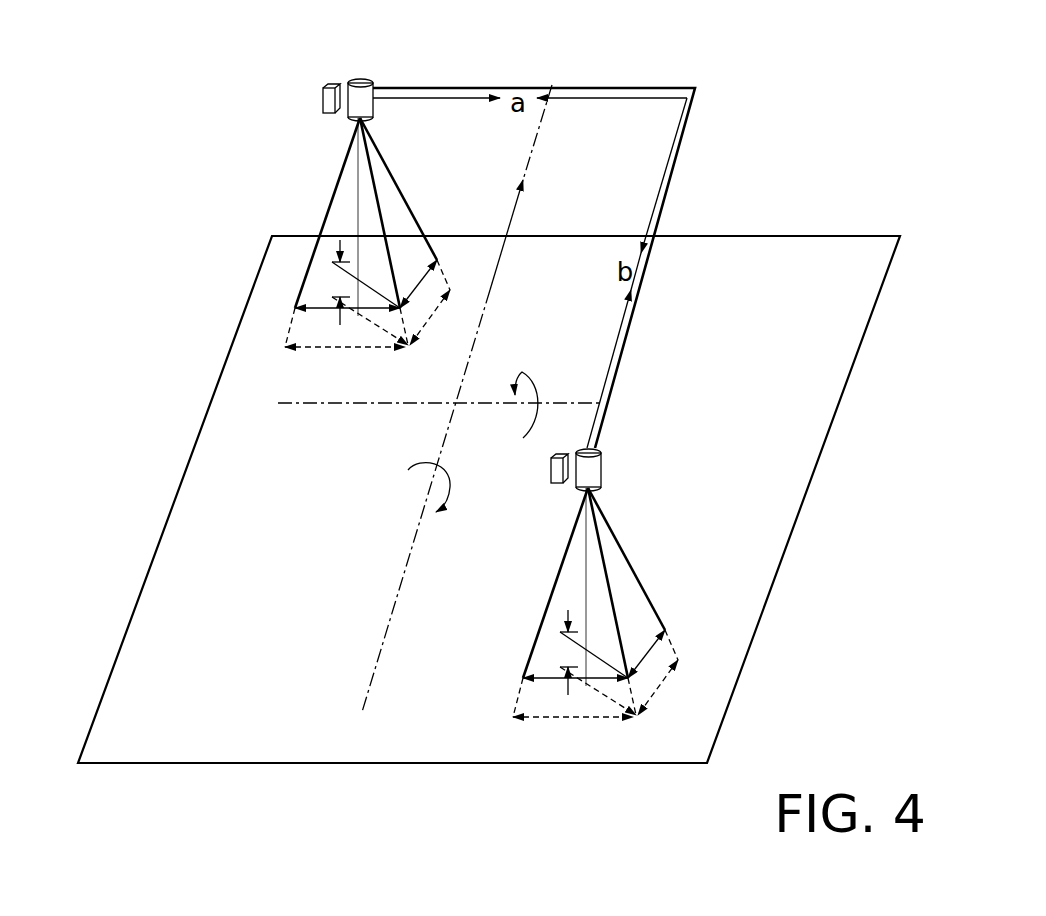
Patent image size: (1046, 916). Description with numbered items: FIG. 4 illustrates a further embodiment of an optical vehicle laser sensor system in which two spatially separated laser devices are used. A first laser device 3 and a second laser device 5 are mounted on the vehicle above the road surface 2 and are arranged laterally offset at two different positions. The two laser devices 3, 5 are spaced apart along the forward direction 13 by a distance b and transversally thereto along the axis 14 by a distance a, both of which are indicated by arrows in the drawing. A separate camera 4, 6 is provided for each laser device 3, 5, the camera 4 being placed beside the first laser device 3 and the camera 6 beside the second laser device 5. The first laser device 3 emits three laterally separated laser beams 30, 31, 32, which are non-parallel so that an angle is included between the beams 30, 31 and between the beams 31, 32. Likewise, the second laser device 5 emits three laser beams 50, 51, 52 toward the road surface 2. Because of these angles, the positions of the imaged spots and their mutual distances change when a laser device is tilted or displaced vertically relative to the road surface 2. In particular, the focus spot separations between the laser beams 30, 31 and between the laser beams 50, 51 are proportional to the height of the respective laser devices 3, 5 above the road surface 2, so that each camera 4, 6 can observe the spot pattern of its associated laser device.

The road surface 2 is at (770, 257).
The first laser device 3 is at (360, 81).
The camera 4 is at (334, 85).
The second laser device 5 is at (602, 468).
The camera 6 is at (562, 452).
The forward direction 13 is at (503, 248).
The axis 14 is at (298, 405).
The laser beam 30 is at (340, 150).
The laser beam 31 is at (372, 183).
The laser beam 32 is at (384, 150).
The laser beam 50 is at (567, 518).
The laser beam 51 is at (600, 550).
The laser beam 52 is at (612, 518).